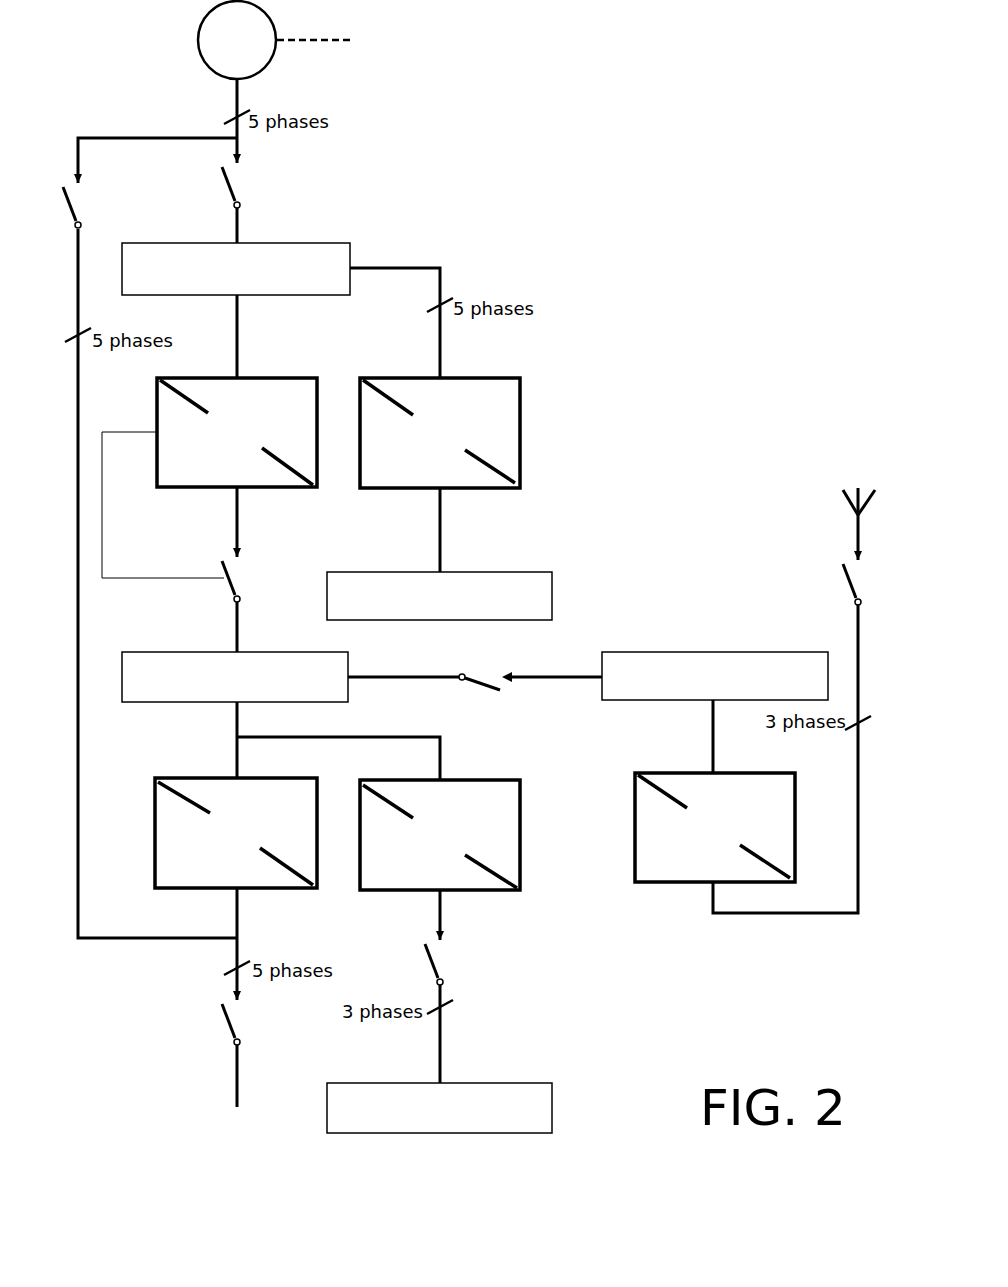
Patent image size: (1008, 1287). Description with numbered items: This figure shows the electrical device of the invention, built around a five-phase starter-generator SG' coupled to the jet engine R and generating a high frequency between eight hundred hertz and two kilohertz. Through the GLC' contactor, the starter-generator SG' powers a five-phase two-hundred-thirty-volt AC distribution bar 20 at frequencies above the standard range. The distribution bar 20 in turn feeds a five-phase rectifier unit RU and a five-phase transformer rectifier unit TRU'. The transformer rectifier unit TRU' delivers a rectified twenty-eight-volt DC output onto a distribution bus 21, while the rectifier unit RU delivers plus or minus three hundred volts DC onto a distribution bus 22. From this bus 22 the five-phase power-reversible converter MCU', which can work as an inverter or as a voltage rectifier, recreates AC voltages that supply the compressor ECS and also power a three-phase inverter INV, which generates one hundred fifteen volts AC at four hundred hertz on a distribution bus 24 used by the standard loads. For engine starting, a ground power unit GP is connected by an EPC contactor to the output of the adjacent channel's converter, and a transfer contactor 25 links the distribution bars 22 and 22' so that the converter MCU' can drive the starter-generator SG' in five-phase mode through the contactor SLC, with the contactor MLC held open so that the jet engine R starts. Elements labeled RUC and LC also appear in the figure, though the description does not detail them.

The distribution bar 20 is at (317, 243).
The distribution bus 21 is at (537, 572).
The distribution bus 22 is at (235, 652).
The distribution bar 22' is at (715, 650).
The distribution bus 24 is at (513, 1083).
The transfer contactor 25 is at (480, 680).
The five-phase starter-generator SG' is at (237, 40).
The jet engine R is at (326, 40).
The GLC' contactor GLC' is at (255, 181).
The contactor SLC is at (91, 201).
The rectifier unit contactor RUC is at (256, 575).
The contactor MLC is at (255, 1018).
The load contactor LC is at (448, 958).
The EPC contactor EPC is at (831, 578).
The ground power unit GP is at (859, 511).
The compressor ECS is at (231, 1120).
The five-phase rectifier unit RU is at (209, 478).
The five-phase transformer rectifier unit TRU' is at (440, 433).
The five-phase power-reversible converter MCU' is at (236, 833).
The three-phase inverter INV is at (440, 835).